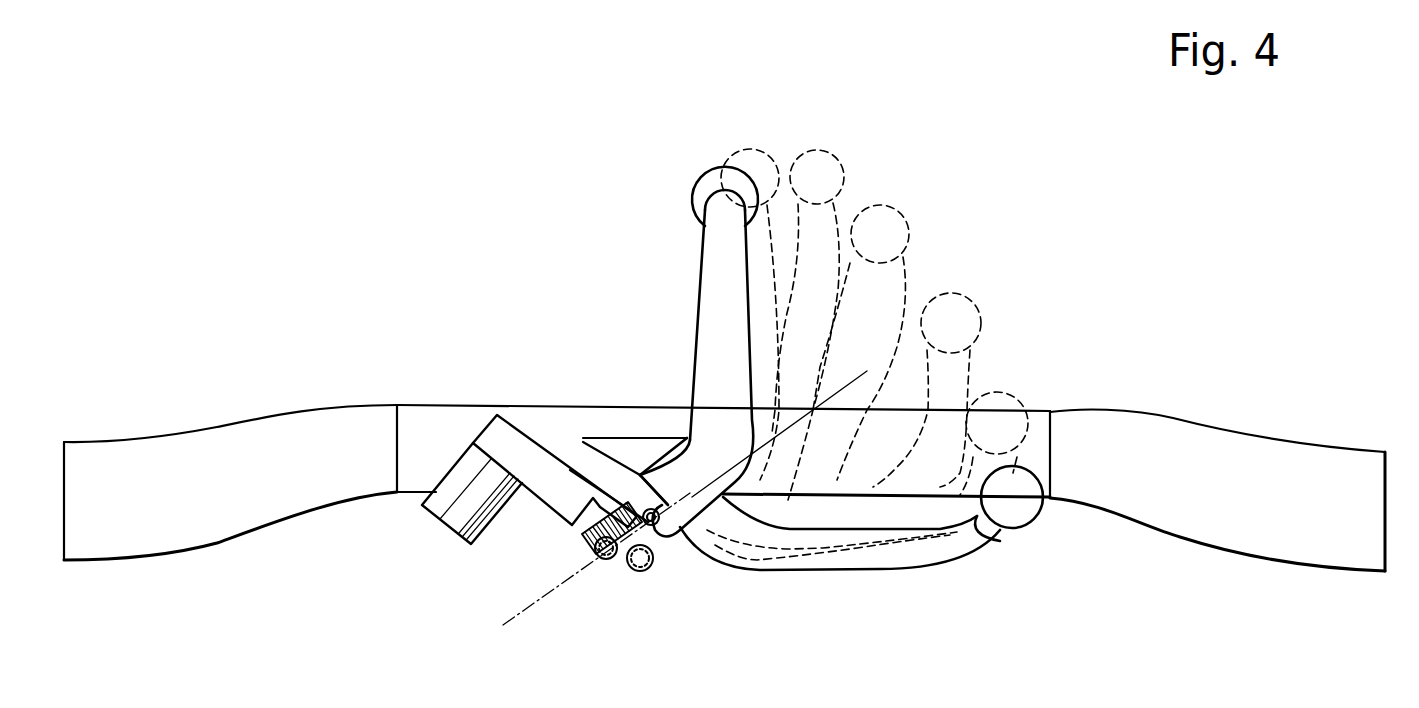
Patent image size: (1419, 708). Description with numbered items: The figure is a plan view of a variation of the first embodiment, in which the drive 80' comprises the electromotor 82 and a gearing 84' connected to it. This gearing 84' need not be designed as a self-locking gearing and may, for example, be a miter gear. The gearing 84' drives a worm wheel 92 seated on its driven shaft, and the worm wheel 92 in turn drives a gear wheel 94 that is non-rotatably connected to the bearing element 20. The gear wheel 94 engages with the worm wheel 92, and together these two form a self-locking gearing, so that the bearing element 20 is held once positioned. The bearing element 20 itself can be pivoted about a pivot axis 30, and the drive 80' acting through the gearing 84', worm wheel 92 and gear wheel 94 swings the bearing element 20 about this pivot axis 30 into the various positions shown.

The bearing element 20 is at (723, 540).
The pivot axis 30 is at (532, 613).
The drive 80' is at (544, 536).
The electromotor 82 is at (437, 520).
The gearing 84' is at (555, 421).
The worm wheel 92 is at (640, 570).
The gear wheel 94 is at (603, 563).